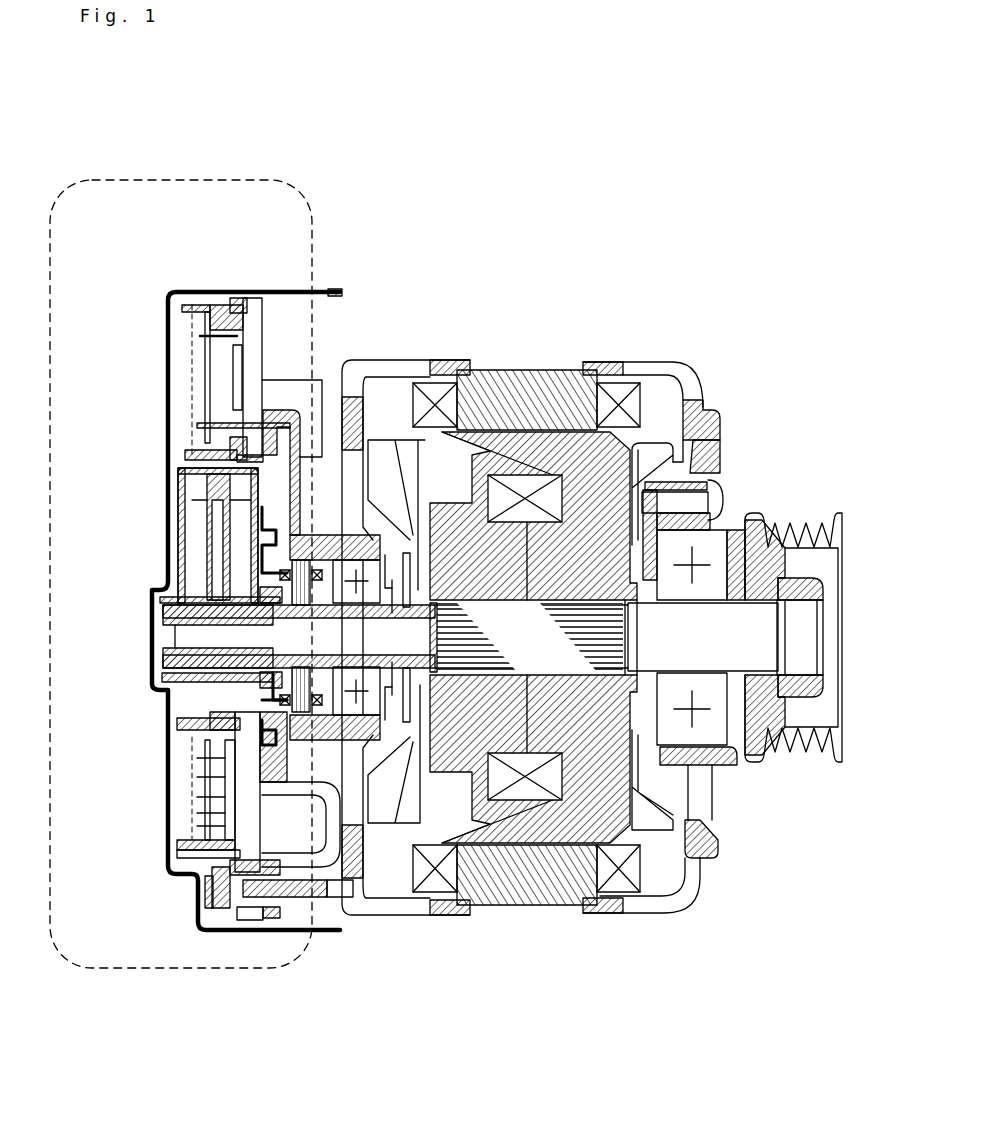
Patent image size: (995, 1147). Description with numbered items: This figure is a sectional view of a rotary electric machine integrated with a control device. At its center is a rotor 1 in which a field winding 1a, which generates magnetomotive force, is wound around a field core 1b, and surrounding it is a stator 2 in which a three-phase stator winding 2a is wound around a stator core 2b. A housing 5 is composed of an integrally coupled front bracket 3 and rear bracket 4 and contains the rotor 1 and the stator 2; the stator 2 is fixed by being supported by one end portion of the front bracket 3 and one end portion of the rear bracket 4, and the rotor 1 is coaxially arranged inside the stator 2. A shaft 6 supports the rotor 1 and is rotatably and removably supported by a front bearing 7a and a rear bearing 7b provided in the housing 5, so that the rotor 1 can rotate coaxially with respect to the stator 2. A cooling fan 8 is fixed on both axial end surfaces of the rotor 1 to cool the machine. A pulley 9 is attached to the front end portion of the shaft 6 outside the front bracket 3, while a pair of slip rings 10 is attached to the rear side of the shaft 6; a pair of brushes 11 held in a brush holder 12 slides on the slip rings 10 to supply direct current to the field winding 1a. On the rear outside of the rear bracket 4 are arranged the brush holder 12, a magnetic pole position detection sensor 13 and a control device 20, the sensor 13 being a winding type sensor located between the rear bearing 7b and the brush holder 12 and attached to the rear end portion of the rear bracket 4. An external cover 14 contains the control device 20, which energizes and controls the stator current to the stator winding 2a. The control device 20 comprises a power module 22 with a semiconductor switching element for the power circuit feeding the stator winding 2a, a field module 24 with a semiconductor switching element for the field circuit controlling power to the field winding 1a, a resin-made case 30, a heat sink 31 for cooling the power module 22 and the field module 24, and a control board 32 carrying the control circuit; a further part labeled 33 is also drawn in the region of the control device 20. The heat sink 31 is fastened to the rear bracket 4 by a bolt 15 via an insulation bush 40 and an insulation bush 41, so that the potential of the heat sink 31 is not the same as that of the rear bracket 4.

The rotor 1 is at (533, 537).
The field winding 1a is at (525, 490).
The field core 1b is at (582, 475).
The stator 2 is at (526, 701).
The stator winding 2a is at (433, 883).
The stator core 2b is at (548, 875).
The front bracket 3 is at (606, 368).
The rear bracket 4 is at (438, 362).
The housing 5 is at (707, 405).
The shaft 6 is at (805, 633).
The front bearing 7a is at (723, 520).
The rear bearing 7b is at (345, 565).
The cooling fan 8 is at (385, 455).
The pulley 9 is at (808, 518).
The slip ring 10 is at (195, 605).
The brush 11 is at (195, 550).
The brush holder 12 is at (205, 487).
The magnetic pole position detection sensor 13 is at (272, 692).
The external cover 14 is at (276, 290).
The bolt 15 is at (213, 902).
The control device 20 is at (182, 180).
The power module 22 is at (230, 785).
The field module 24 is at (240, 373).
The resin-made case 30 is at (192, 850).
The heat sink 31 is at (247, 918).
The control board 32 is at (205, 352).
The connector housing 33 is at (198, 405).
The insulation bush 40 is at (230, 917).
The insulation bush 41 is at (270, 907).